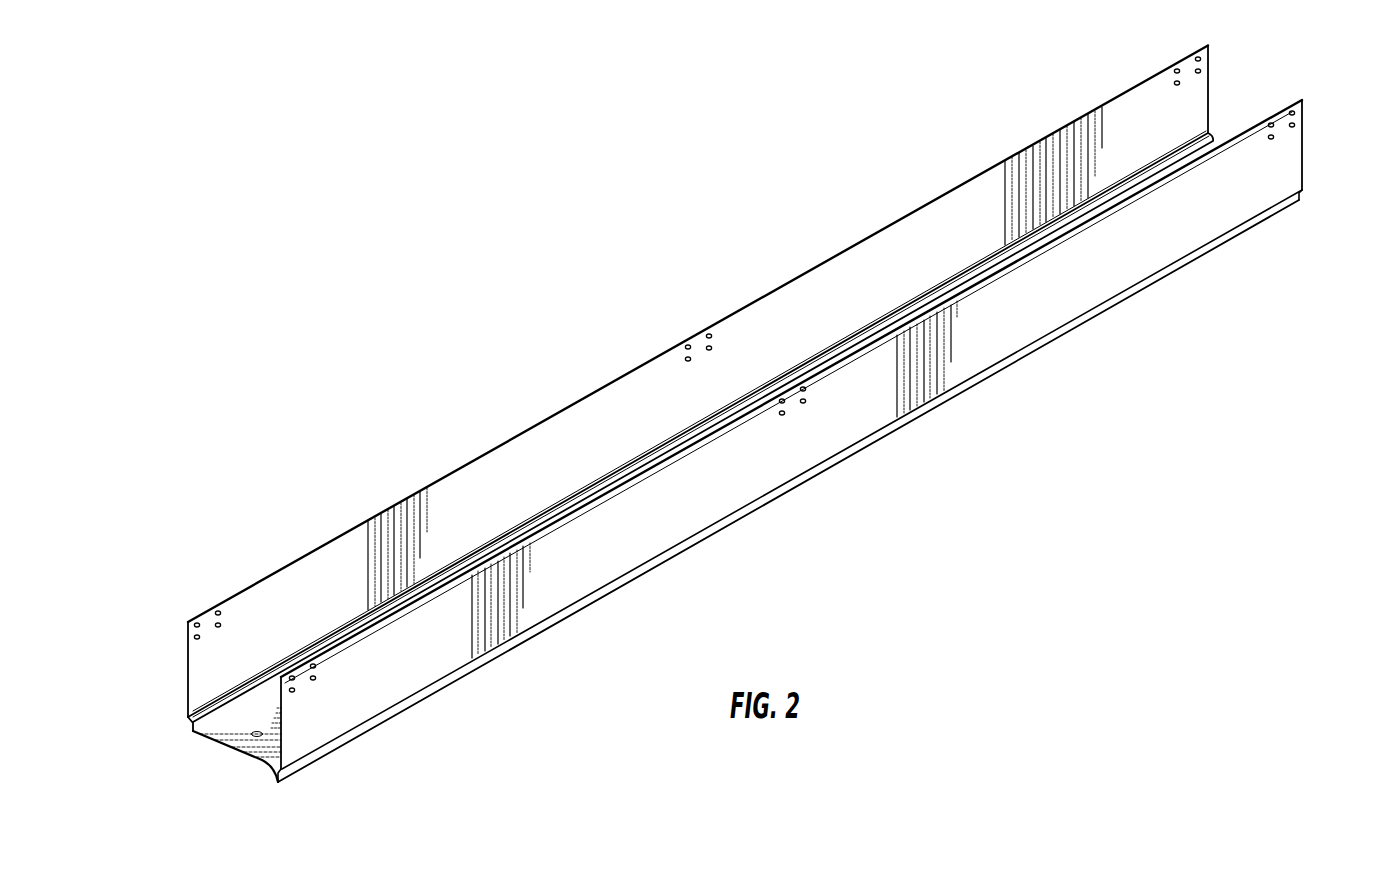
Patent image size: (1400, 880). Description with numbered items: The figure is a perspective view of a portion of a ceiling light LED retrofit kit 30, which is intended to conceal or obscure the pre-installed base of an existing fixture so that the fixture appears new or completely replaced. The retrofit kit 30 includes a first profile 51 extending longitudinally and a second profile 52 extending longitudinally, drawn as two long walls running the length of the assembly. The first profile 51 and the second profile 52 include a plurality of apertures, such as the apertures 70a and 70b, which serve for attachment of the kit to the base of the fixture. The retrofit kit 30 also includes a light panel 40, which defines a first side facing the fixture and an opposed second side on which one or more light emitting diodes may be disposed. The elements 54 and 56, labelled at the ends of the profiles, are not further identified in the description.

The retrofit kit 30 is at (678, 194).
The light panel 40 is at (236, 750).
The first profile 51 is at (595, 580).
The second profile 52 is at (468, 462).
The rear flange 54 is at (188, 645).
The front flange 56 is at (1304, 128).
The aperture 70a is at (711, 330).
The aperture 70b is at (685, 347).